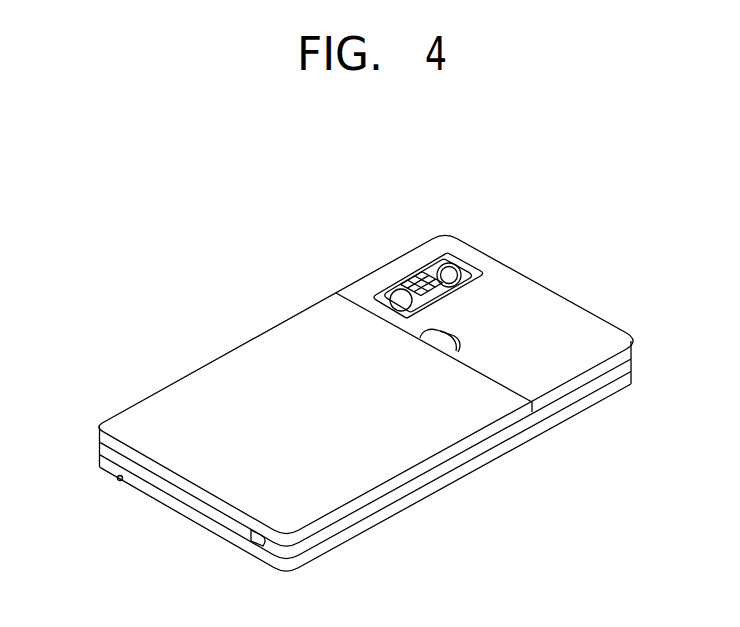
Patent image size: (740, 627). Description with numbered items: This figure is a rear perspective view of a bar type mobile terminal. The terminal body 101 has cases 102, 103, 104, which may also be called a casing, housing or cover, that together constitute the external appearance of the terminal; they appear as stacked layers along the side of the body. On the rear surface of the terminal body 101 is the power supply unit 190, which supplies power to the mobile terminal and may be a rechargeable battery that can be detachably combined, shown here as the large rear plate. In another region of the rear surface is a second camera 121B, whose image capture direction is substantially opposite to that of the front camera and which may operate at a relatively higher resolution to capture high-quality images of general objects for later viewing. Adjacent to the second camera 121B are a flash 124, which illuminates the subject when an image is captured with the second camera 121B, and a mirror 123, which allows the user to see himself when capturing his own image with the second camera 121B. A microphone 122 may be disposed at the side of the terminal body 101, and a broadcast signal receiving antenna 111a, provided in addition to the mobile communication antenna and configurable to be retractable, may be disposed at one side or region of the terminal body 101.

The terminal body 101 is at (569, 281).
The case 102 is at (570, 413).
The case 103 is at (596, 387).
The case 104 is at (615, 361).
The broadcast signal receiving antenna 111a is at (258, 540).
The second camera 121B is at (446, 273).
The microphone 122 is at (117, 481).
The mirror 123 is at (398, 296).
The flash 124 is at (421, 287).
The power supply unit 190 is at (243, 363).